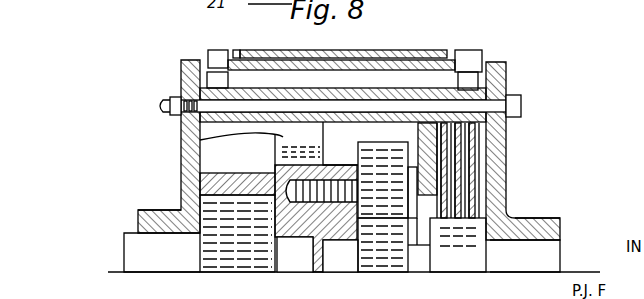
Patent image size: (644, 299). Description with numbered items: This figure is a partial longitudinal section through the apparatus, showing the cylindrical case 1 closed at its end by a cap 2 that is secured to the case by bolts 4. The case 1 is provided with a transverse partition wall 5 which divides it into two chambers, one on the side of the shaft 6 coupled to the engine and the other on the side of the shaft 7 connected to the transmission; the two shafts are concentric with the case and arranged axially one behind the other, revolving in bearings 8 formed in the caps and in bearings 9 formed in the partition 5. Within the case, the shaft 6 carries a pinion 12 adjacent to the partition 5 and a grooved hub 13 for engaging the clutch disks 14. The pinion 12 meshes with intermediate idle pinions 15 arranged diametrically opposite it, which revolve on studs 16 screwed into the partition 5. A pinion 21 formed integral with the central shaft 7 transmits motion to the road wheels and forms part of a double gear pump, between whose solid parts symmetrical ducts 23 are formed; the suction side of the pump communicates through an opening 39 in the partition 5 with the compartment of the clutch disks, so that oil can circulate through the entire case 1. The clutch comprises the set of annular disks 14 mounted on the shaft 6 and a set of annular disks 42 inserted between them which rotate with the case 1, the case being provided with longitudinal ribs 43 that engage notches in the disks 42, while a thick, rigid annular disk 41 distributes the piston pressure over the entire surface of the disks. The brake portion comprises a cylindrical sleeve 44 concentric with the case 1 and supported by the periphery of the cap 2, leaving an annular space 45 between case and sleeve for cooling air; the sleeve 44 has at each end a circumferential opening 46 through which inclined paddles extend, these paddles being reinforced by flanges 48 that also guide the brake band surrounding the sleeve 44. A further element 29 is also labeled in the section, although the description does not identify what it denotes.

The cylindrical case 1 is at (353, 92).
The cap 2 is at (507, 83).
The bolt 4 is at (493, 107).
The transverse partition wall 5 is at (181, 71).
The shaft 6 is at (538, 253).
The shaft 7 is at (141, 246).
The bearing 8 is at (157, 210).
The bearing 9 is at (316, 218).
The pinion 12 is at (375, 265).
The grooved hub 13 is at (490, 215).
The clutch disks 14 is at (448, 196).
The intermediate idle pinion 15 is at (362, 141).
The stud 16 is at (413, 153).
The pinion 21 is at (218, 257).
The duct 23 is at (232, 157).
The insulating layer 29 is at (290, 42).
The opening 39 is at (200, 140).
The annular disk 41 is at (455, 165).
The annular disks 42 is at (450, 145).
The longitudinal rib 43 is at (482, 90).
The cylindrical sleeve 44 is at (415, 60).
The annular space 45 is at (471, 52).
The circumferential opening 46 is at (218, 50).
The flange 48 is at (239, 50).